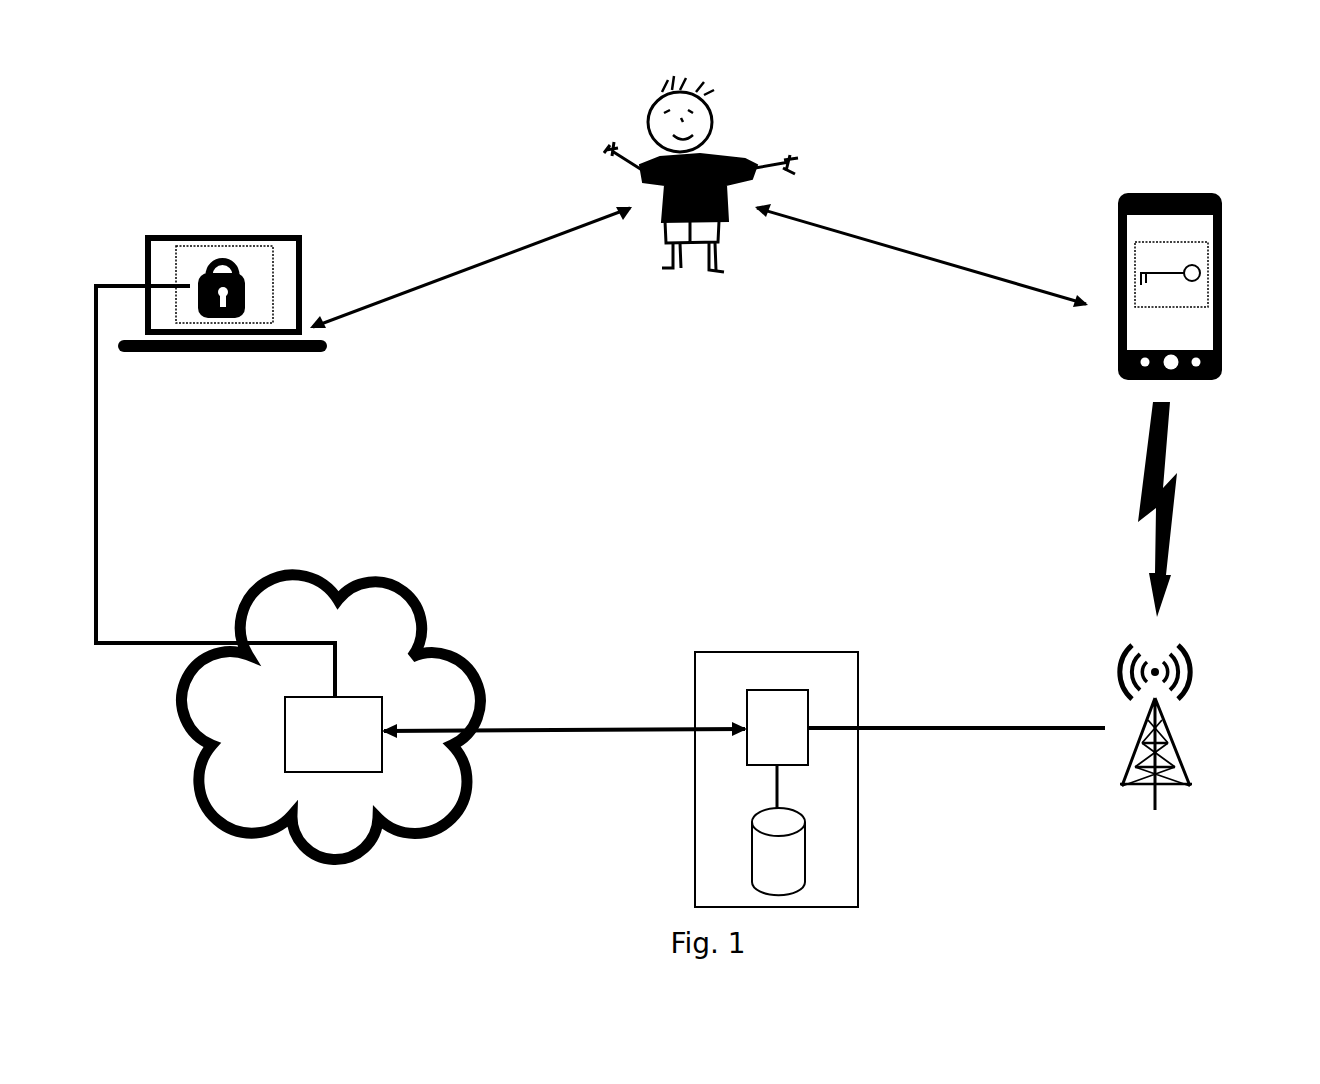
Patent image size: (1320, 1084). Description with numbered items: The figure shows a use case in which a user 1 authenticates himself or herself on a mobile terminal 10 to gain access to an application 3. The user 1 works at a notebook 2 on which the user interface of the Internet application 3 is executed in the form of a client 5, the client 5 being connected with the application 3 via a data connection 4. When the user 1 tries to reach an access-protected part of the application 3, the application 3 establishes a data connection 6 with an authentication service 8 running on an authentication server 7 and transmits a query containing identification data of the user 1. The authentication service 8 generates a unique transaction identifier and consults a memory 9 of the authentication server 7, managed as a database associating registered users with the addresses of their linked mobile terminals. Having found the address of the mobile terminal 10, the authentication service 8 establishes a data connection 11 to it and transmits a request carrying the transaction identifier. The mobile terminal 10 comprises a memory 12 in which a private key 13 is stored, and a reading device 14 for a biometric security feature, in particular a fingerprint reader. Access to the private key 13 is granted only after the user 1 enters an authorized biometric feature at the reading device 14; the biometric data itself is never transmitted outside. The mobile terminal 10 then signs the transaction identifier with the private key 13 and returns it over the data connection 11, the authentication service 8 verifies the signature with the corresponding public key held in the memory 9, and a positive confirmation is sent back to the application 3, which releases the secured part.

The user 1 is at (713, 123).
The notebook 2 is at (295, 236).
The application 3 is at (333, 734).
The data connection 4 is at (98, 501).
The client 5 is at (275, 288).
The data connection 6 is at (500, 728).
The authentication server 7 is at (858, 678).
The authentication service 8 is at (777, 727).
The memory 9 is at (778, 830).
The mobile terminal 10 is at (1145, 197).
The data connection 11 is at (1140, 500).
The memory 12 is at (1182, 242).
The private key 13 is at (1195, 270).
The reading device 14 is at (1185, 380).